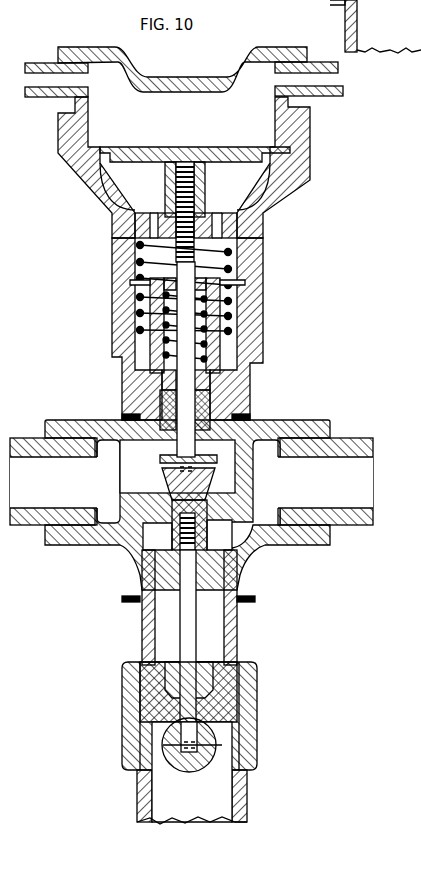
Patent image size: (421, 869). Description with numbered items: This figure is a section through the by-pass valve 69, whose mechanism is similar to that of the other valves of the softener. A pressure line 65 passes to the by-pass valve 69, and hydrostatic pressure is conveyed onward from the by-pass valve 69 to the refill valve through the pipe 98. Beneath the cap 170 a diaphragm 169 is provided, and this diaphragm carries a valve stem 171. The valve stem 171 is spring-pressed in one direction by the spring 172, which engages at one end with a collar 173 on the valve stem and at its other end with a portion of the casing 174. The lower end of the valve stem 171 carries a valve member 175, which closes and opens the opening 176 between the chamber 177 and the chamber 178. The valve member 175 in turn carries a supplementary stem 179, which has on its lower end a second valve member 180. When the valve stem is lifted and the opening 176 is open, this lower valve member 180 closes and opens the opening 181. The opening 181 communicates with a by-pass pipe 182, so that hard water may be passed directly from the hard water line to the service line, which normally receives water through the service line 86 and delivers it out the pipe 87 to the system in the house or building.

The line 65 is at (33, 63).
The pipe 98 is at (334, 96).
The cap 170 is at (205, 76).
The diaphragm 169 is at (226, 152).
The by-pass valve 69 is at (60, 162).
The valve stem 171 is at (165, 184).
The collar 173 is at (135, 231).
The spring 172 is at (140, 256).
The casing 174 is at (128, 374).
The valve member 175 is at (160, 478).
The chamber 177 is at (108, 480).
The chamber 178 is at (270, 478).
The opening 176 is at (210, 532).
The service line 86 is at (25, 524).
The pipe 87 is at (364, 525).
The supplementary stem 179 is at (180, 610).
The opening 181 is at (145, 645).
The by-pass pipe 182 is at (138, 793).
The valve member 180 is at (190, 770).